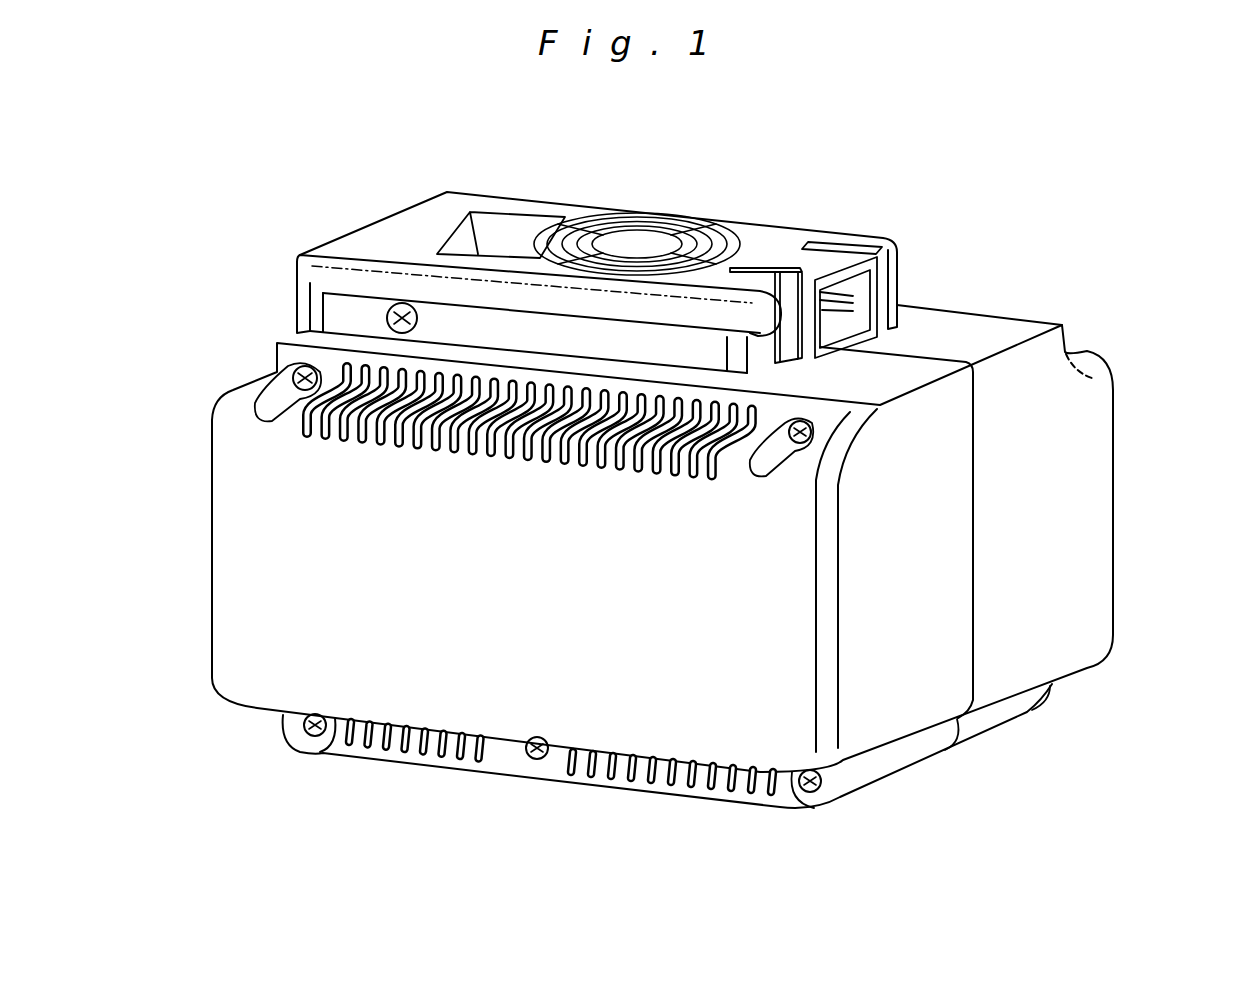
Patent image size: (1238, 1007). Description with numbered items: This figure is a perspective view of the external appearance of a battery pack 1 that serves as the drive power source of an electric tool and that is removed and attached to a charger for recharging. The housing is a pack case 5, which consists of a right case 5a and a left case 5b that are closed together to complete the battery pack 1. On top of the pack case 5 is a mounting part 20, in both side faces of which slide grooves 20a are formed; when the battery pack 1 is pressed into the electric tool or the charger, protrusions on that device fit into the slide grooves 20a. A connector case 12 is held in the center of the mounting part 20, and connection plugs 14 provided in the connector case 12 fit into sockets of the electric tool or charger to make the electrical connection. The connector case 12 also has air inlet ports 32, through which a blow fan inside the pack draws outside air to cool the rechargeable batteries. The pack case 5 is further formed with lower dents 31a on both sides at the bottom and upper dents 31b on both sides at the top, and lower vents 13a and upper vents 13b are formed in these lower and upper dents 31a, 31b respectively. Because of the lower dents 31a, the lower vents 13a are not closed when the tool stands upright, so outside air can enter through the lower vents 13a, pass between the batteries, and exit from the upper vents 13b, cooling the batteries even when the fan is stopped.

The battery pack 1 is at (992, 220).
The pack case 5 is at (1172, 407).
The right case 5a is at (1053, 440).
The left case 5b is at (937, 577).
The connector case 12 is at (770, 250).
The lower vents 13a is at (368, 742).
The upper vents 13b is at (345, 423).
The connection plugs 14 is at (862, 306).
The mounting part 20 is at (376, 232).
The slide grooves 20a is at (490, 325).
The lower dents 31a is at (787, 793).
The upper dents 31b is at (277, 370).
The air inlet ports 32 is at (625, 235).